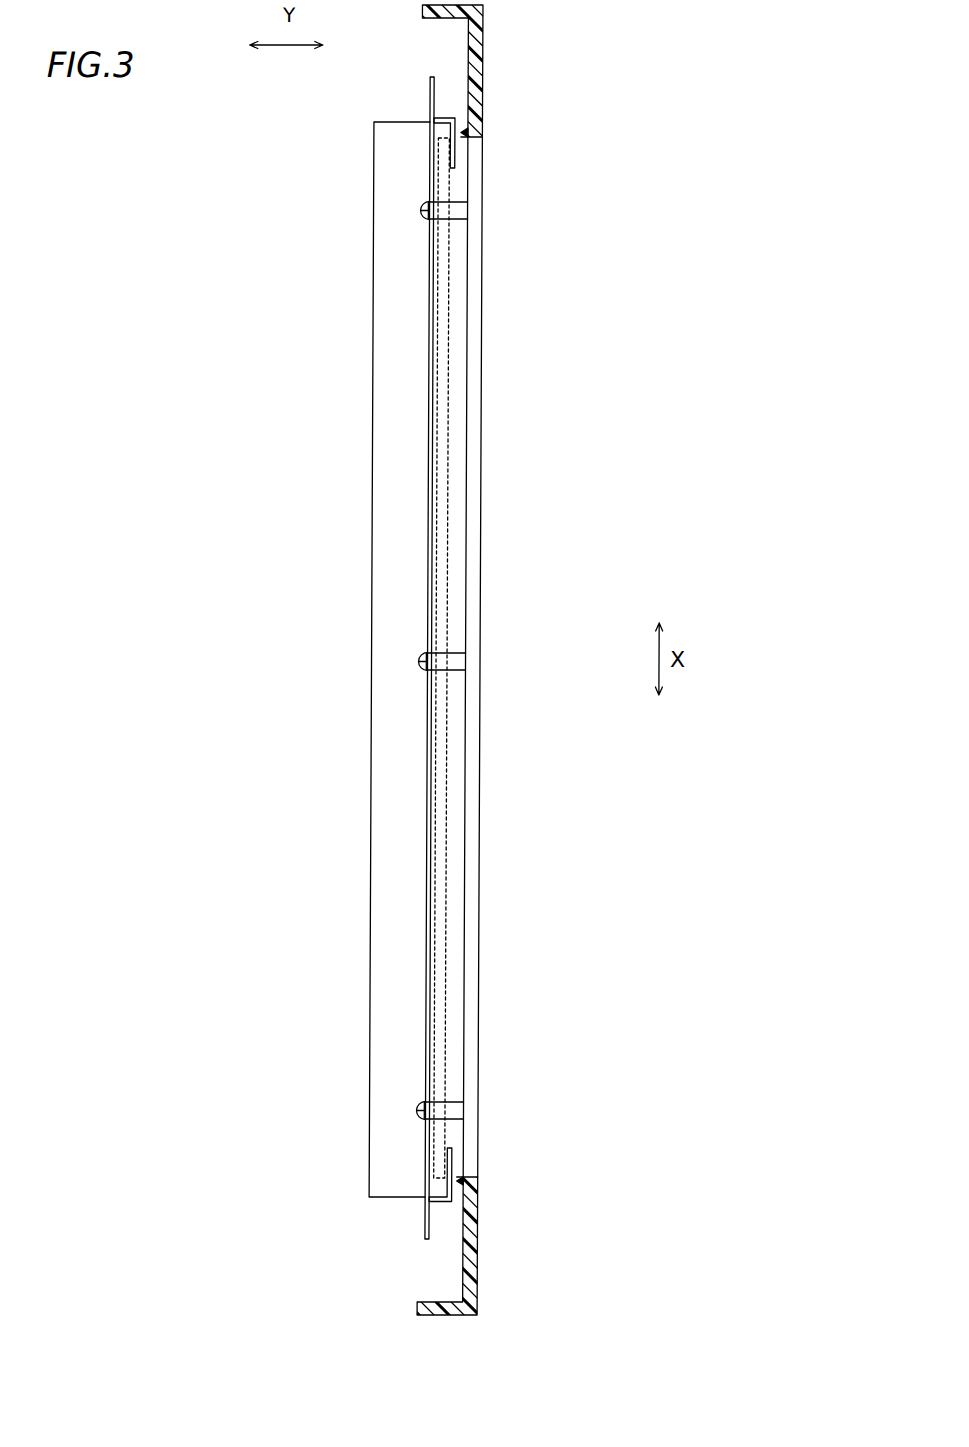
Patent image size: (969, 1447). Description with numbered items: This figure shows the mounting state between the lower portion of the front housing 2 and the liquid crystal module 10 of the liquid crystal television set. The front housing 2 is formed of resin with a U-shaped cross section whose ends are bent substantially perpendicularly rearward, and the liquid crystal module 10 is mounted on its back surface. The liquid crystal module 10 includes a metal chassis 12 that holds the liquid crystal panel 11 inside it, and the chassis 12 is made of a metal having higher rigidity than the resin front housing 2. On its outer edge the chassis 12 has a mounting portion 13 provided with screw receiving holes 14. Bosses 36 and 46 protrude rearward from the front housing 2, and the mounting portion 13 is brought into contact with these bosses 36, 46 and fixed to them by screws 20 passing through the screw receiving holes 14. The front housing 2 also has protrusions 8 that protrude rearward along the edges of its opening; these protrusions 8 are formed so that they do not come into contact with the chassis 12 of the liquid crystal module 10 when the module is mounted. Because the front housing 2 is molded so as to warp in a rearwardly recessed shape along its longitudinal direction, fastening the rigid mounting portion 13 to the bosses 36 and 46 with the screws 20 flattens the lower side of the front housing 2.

The front housing 2 is at (473, 63).
The protrusion 8 is at (479, 127).
The liquid crystal module 10 is at (326, 519).
The liquid crystal panel 11 is at (430, 467).
The chassis 12 is at (480, 1225).
The mounting portion 13 is at (430, 80).
The screw receiving hole 14 is at (429, 245).
The screw 20 is at (419, 202).
The boss 36 is at (466, 210).
The boss 46 is at (465, 660).